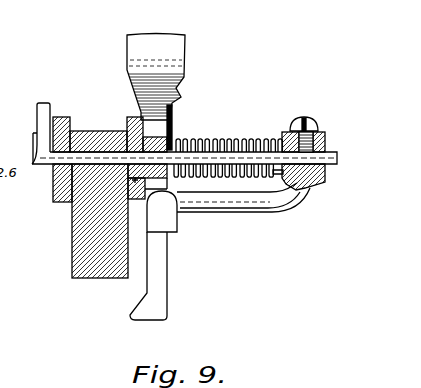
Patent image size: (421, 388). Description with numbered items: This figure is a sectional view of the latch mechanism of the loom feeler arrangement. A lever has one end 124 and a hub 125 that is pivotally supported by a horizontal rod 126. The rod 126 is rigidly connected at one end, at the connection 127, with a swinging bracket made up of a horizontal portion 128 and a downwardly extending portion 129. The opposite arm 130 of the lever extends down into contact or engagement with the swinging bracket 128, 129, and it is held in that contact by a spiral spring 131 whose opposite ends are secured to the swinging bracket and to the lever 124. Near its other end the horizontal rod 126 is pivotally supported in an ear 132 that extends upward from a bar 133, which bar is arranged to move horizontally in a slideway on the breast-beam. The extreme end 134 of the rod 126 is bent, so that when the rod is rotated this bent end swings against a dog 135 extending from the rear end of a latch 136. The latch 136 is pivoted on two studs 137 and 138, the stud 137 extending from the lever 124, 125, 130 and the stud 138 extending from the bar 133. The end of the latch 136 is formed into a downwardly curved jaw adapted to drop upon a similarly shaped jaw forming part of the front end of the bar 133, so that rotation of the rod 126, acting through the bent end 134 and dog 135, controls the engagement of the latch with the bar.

The end of lever 124 is at (187, 43).
The hub 125 is at (188, 138).
The horizontal rod 126 is at (338, 157).
The connection 127 is at (307, 123).
The horizontal portion of swinging bracket 128 is at (297, 195).
The downwardly extending portion of swinging bracket 129 is at (167, 255).
The opposite arm of lever 130 is at (165, 221).
The spiral spring 131 is at (247, 140).
The ear 132 is at (100, 130).
The bar 133 is at (72, 246).
The extreme end of rod 134 is at (31, 109).
The dog 135 is at (35, 146).
The latch 136 is at (68, 117).
The stud 137 is at (147, 194).
The stud 138 is at (55, 180).